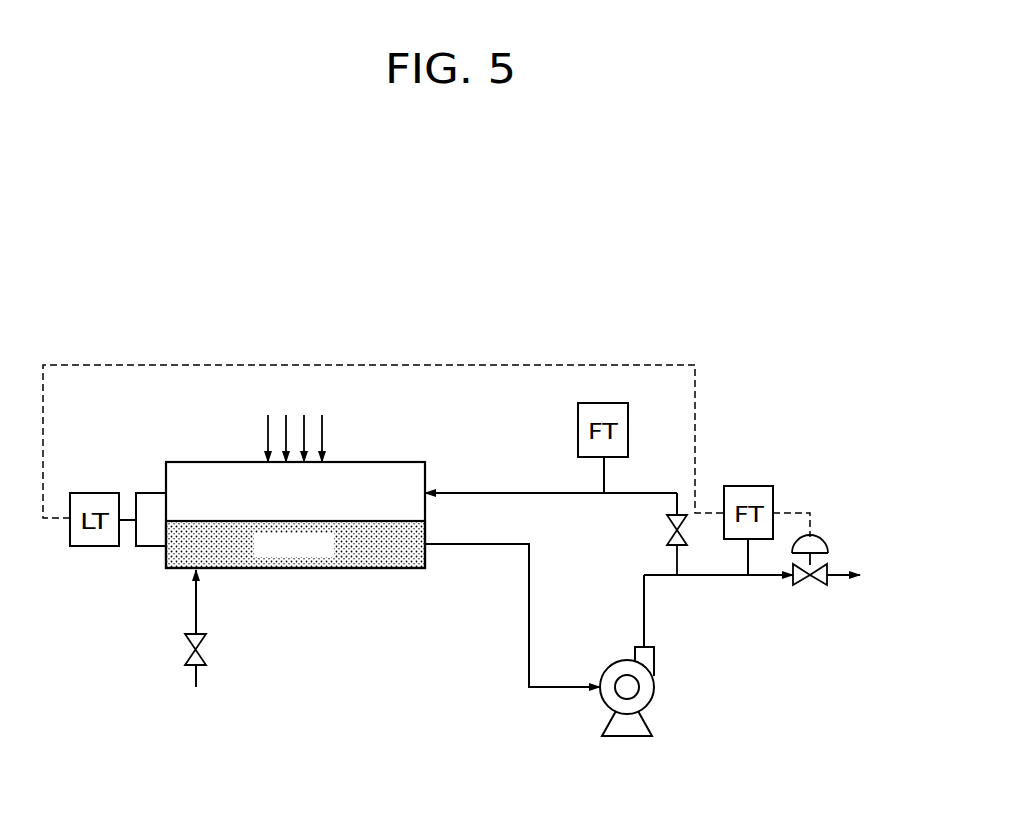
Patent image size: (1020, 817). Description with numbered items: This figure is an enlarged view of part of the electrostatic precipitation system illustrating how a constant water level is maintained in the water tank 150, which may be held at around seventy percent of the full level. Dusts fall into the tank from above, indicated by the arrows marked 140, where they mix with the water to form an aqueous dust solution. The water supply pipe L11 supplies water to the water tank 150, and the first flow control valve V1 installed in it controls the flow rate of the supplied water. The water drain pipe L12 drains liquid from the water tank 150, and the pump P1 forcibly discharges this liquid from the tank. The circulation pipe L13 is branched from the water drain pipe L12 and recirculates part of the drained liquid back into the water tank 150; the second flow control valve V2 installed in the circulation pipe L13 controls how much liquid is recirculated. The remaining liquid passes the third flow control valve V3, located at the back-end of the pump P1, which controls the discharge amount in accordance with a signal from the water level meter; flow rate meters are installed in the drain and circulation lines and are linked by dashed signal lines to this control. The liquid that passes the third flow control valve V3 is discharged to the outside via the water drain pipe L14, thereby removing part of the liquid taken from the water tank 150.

The dusts 140 is at (268, 429).
The water tank 150 is at (362, 455).
The first flow control valve V1 is at (184, 647).
The second flow control valve V2 is at (665, 527).
The third flow control valve V3 is at (810, 590).
The pump P1 is at (660, 702).
The water supply pipe L11 is at (195, 643).
The water drain pipe L12 is at (512, 603).
The circulation pipe L13 is at (551, 489).
The water drain pipe L14 is at (867, 575).